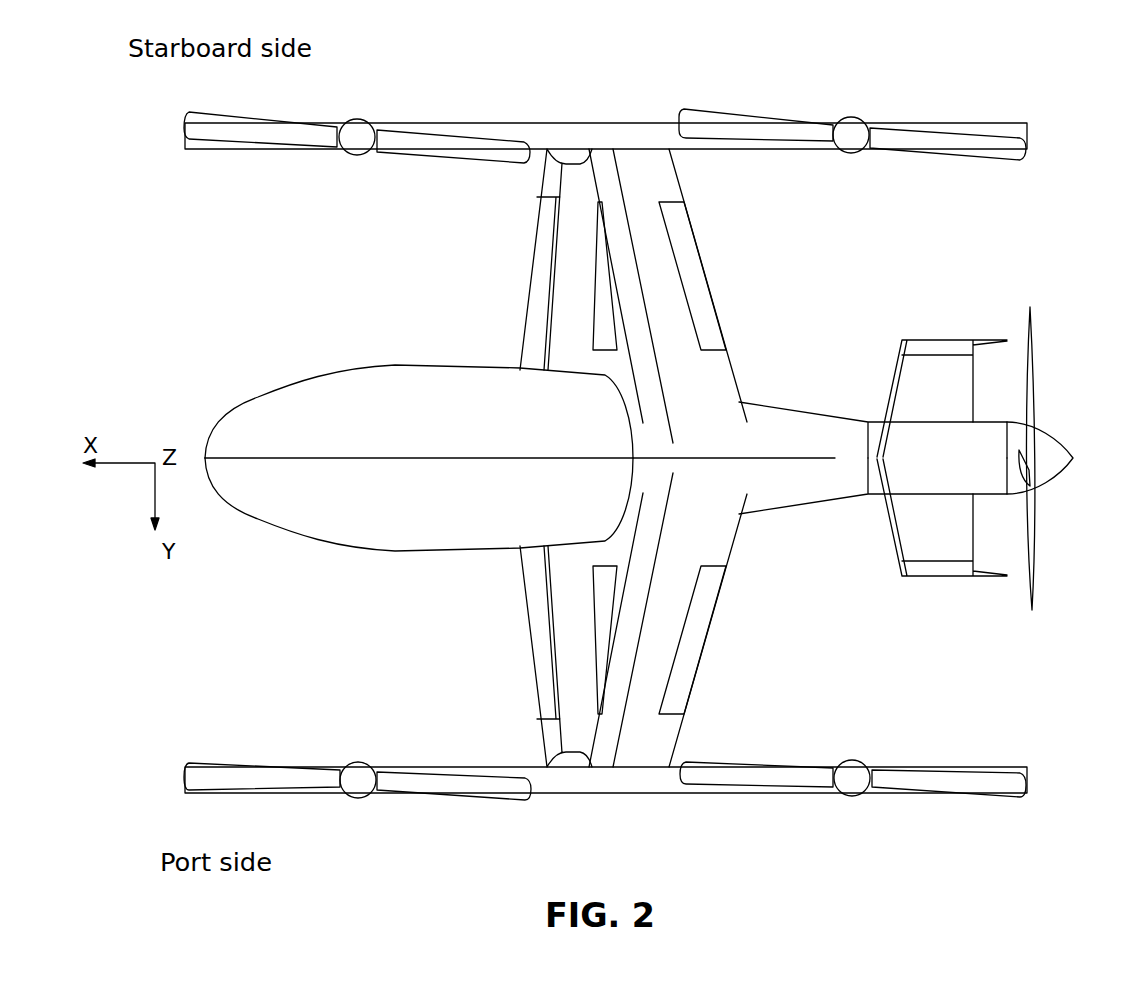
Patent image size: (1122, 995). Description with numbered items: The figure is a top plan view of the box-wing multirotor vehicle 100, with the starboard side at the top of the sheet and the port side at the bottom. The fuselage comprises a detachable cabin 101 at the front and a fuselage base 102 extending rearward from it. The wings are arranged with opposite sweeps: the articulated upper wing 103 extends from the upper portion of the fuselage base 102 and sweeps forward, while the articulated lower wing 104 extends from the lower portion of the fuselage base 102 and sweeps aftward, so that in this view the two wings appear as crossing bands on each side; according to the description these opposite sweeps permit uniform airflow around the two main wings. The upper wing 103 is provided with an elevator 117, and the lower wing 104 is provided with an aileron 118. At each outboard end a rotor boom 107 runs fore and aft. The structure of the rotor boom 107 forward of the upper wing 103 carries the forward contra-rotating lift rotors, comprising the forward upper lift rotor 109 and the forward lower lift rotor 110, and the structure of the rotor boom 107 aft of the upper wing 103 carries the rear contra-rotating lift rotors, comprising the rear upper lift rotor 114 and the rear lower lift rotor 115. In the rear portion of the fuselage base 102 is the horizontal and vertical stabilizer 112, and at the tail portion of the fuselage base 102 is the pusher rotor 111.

The box-wing multirotor vehicle 100 is at (638, 84).
The detachable cabin 101 is at (258, 400).
The fuselage base 102 is at (808, 372).
The upper wing 103 is at (678, 180).
The lower wing 104 is at (531, 278).
The rotor boom 107 is at (558, 106).
The forward upper lift rotor 109 is at (205, 140).
The forward lower lift rotor 110 is at (357, 458).
The pusher rotor 111 is at (1030, 530).
The horizontal and vertical stabilizer 112 is at (920, 336).
The rear upper lift rotor 114 is at (1022, 160).
The rear lower lift rotor 115 is at (851, 456).
The elevator 117 is at (718, 306).
The aileron 118 is at (595, 325).